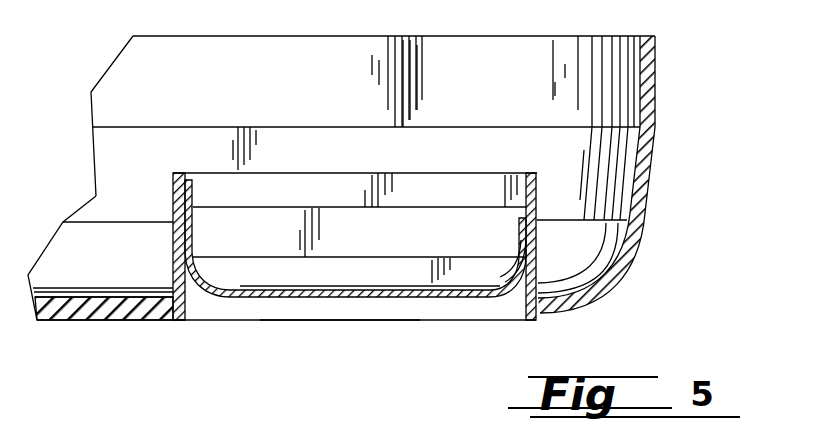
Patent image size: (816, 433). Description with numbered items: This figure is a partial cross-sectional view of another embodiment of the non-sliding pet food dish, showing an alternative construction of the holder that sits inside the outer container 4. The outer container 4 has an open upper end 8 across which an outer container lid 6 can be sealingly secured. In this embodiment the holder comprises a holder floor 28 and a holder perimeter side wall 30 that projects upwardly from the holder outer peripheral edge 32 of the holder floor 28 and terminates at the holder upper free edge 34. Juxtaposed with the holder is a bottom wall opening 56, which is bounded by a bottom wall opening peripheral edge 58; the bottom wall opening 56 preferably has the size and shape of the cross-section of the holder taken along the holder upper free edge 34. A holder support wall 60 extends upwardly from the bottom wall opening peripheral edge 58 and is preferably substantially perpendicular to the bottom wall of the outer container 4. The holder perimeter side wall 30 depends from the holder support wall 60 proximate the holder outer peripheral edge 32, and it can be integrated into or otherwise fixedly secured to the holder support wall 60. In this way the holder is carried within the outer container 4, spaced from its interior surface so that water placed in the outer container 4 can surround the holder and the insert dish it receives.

The outer container 4 is at (646, 197).
The outer container lid 6 is at (350, 432).
The open upper end 8 is at (160, 29).
The holder floor 28 is at (367, 299).
The holder perimeter side wall 30 is at (174, 225).
The holder outer peripheral edge 32 is at (211, 270).
The holder upper free edge 34 is at (536, 172).
The bottom wall opening 56 is at (252, 340).
The bottom wall opening peripheral edge 58 is at (184, 321).
The holder support wall 60 is at (174, 273).